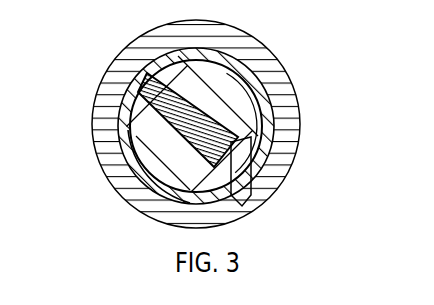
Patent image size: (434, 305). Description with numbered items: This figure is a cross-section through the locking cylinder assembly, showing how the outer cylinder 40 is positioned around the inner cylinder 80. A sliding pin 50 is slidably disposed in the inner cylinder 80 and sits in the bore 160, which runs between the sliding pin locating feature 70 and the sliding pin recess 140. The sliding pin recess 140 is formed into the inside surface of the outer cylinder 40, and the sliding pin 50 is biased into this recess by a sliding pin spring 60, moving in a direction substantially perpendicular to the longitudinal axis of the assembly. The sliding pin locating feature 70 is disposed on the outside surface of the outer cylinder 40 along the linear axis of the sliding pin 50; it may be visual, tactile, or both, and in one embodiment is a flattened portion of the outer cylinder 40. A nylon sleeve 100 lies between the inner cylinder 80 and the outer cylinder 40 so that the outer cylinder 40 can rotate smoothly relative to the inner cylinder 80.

The outer cylinder 40 is at (127, 192).
The sliding pin 50 is at (275, 170).
The sliding pin spring 60 is at (120, 84).
The sliding pin locating feature 70 is at (122, 52).
The inner cylinder 80 is at (122, 128).
The nylon sleeve 100 is at (265, 105).
The sliding pin recess 140 is at (273, 180).
The bore 160 is at (235, 110).